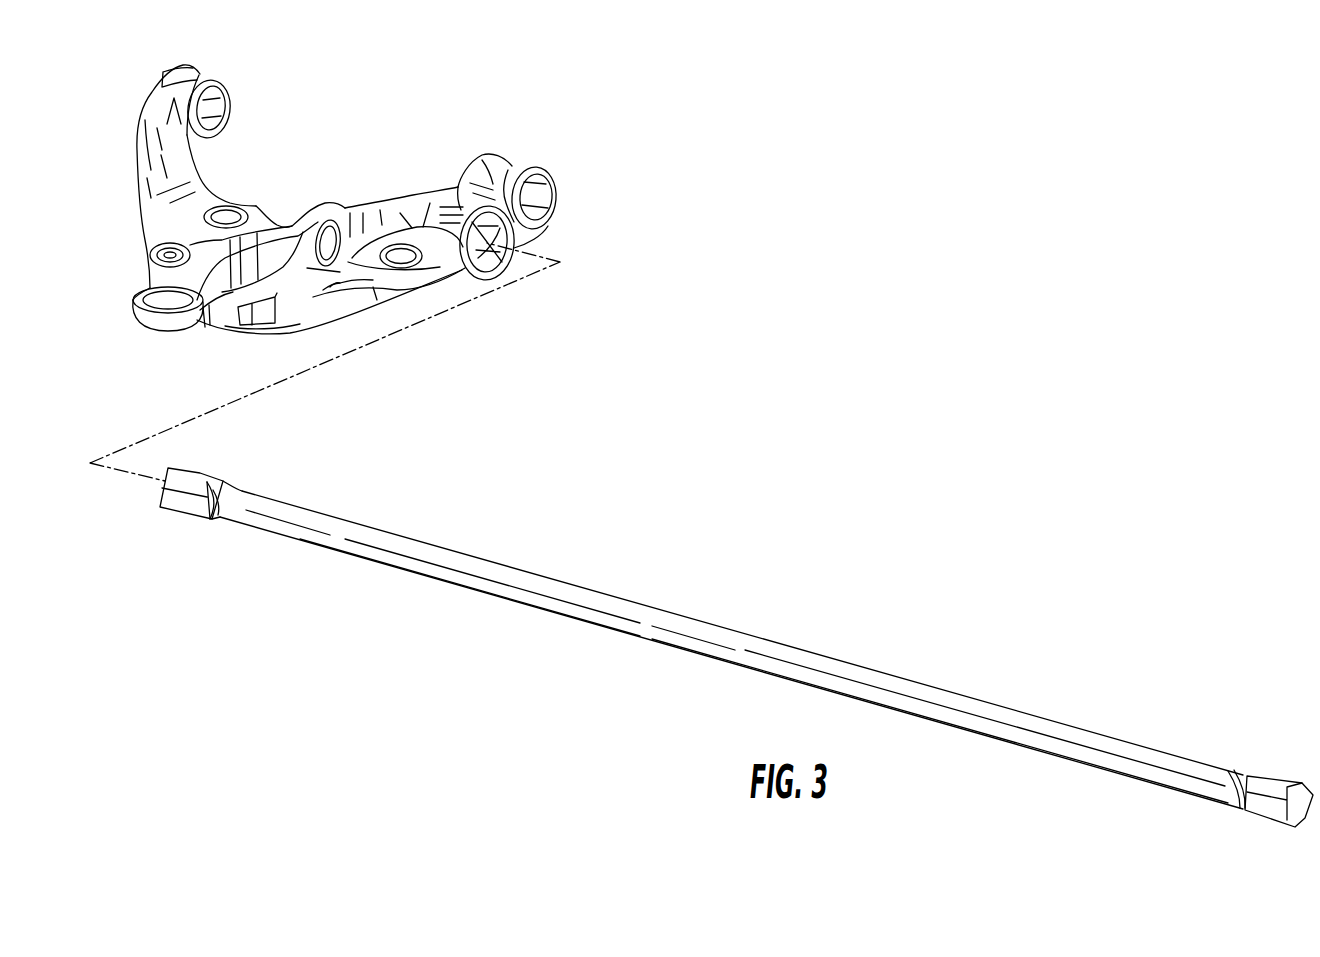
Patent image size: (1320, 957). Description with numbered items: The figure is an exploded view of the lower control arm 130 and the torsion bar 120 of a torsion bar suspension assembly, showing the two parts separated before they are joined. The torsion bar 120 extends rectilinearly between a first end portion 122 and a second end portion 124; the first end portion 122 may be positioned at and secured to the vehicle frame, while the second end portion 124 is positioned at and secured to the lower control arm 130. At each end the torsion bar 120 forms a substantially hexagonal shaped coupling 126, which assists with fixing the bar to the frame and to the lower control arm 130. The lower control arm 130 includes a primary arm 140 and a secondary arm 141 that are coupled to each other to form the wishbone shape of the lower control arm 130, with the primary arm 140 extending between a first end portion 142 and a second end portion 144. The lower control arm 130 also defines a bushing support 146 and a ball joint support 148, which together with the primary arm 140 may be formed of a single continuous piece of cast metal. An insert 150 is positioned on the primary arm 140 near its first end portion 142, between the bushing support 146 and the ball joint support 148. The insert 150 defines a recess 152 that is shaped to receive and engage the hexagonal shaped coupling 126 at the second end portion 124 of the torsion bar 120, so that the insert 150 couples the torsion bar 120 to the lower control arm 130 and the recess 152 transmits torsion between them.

The torsion bar 120 is at (643, 612).
The first end portion 122 is at (1231, 817).
The second end portion 124 is at (207, 542).
The substantially hexagonal shaped coupling 126 is at (195, 490).
The lower control arm 130 is at (263, 218).
The primary arm 140 is at (340, 303).
The secondary arm 141 is at (150, 183).
The first end portion 142 is at (456, 181).
The second end portion 144 is at (207, 333).
The bushing support 146 is at (532, 167).
The ball joint support 148 is at (148, 318).
The insert 150 is at (498, 272).
The recess 152 is at (482, 246).